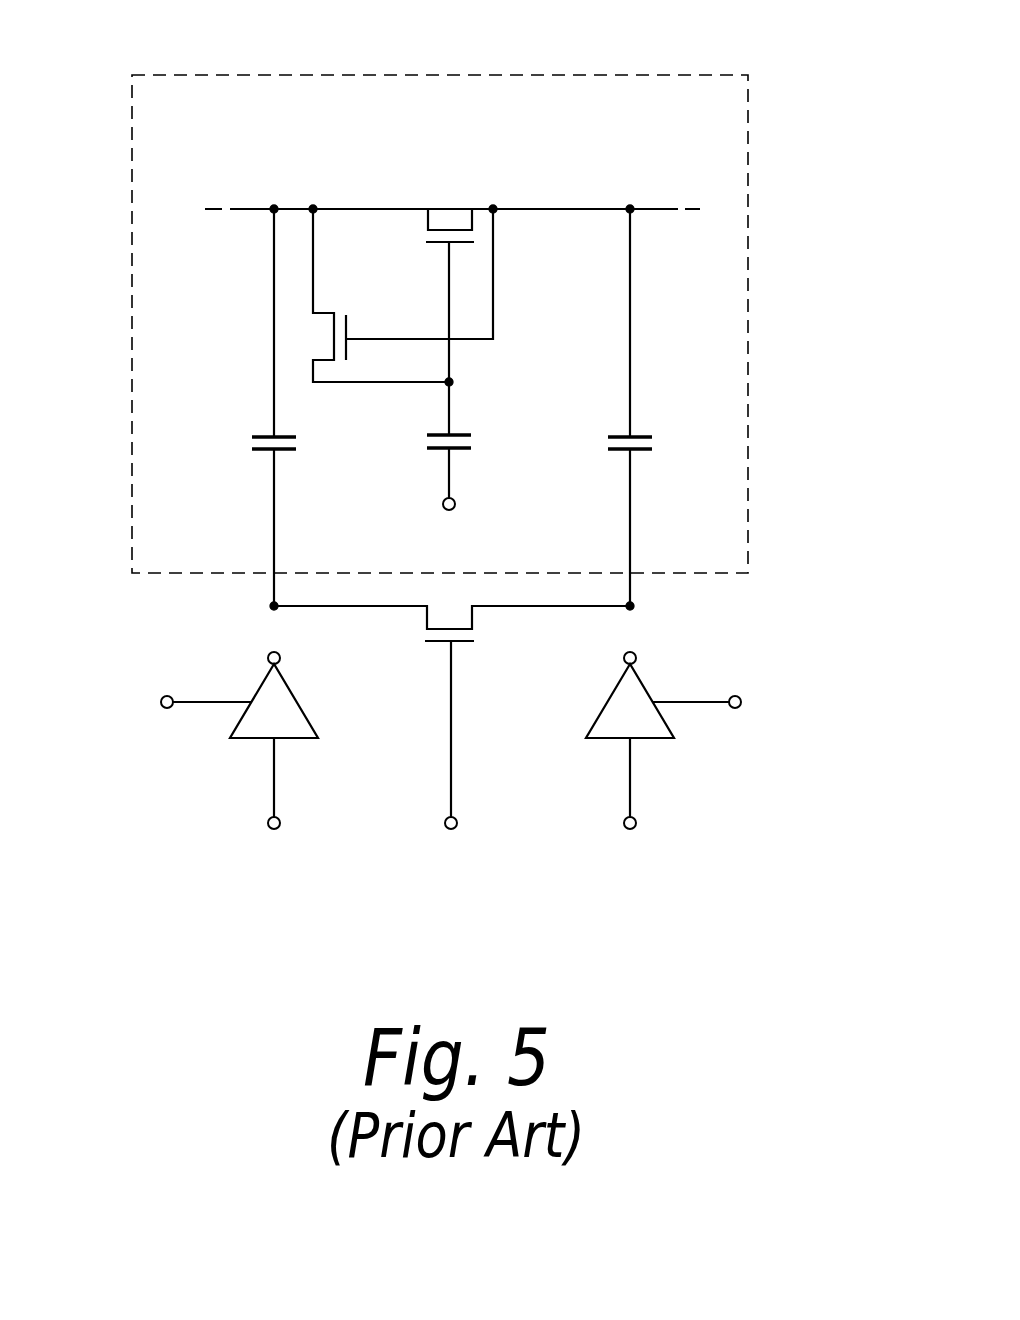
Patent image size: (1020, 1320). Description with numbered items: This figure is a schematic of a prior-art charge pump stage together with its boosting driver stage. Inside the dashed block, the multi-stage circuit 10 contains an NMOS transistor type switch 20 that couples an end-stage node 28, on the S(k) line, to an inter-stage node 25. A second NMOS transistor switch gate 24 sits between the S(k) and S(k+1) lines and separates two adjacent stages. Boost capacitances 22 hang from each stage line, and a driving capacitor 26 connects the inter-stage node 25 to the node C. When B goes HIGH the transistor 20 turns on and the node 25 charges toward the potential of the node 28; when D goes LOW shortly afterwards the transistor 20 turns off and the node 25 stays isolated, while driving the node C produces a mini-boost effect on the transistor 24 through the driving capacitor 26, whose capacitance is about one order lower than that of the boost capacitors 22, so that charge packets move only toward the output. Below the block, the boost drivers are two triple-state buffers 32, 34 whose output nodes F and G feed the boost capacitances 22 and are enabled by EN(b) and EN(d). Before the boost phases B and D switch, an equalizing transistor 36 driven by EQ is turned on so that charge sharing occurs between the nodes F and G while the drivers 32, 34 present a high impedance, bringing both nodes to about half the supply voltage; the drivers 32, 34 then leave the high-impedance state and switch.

The multi-stage circuit 10 is at (748, 118).
The NMOS transistor type switch 20 is at (347, 328).
The boost capacitances 22 is at (265, 433).
The NMOS transistor switch gate 24 is at (428, 218).
The inter-stage node 25 is at (453, 380).
The driving capacitor 26 is at (458, 435).
The end-stage node 28 is at (255, 215).
The triple-state buffer 32 is at (258, 683).
The triple-state buffer 34 is at (642, 683).
The equalizing transistor 36 is at (458, 644).